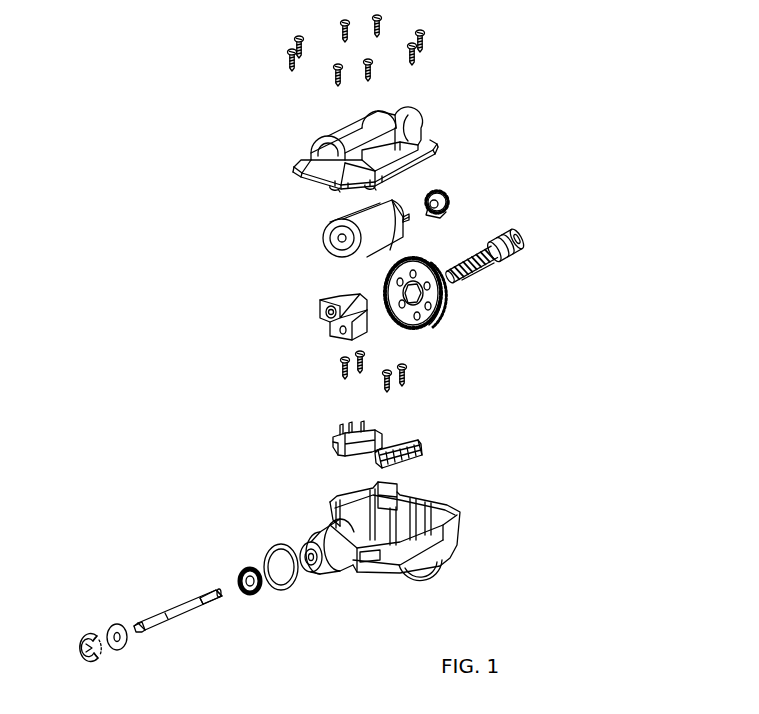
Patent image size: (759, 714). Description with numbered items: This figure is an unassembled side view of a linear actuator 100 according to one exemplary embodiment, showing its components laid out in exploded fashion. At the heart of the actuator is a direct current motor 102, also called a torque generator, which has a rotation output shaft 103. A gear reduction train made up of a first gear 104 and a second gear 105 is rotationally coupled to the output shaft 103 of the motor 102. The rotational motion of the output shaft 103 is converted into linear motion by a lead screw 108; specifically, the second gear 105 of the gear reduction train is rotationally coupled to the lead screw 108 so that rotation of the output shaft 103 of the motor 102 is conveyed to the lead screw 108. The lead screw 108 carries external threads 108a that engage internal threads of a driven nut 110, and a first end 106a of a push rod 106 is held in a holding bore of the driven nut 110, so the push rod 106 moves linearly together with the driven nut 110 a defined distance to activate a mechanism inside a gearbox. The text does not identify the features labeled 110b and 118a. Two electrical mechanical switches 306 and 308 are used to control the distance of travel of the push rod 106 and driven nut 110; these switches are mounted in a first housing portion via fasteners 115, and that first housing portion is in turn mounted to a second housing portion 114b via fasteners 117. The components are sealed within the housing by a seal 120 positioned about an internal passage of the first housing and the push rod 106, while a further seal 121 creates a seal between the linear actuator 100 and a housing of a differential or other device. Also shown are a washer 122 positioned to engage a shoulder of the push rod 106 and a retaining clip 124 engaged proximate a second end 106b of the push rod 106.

The linear actuator 100 is at (662, 147).
The fasteners 117 is at (334, 78).
The second housing portion 114b is at (400, 113).
The direct current motor 102 is at (338, 217).
The rotation output shaft 103 is at (407, 217).
The first gear 104 is at (452, 202).
The second gear 105 is at (428, 317).
The lead screw 108 is at (501, 264).
The external threads 108a is at (483, 281).
The driven nut 110 is at (338, 300).
The bearing bore 110b is at (322, 316).
The fasteners 115 is at (384, 378).
The electrical mechanical switch 306 is at (333, 449).
The electrical mechanical switch 308 is at (423, 449).
The housing base 118a is at (460, 529).
The seal 120 is at (248, 569).
The seal 121 is at (288, 591).
The push rod 106 is at (177, 601).
The first end 106a is at (210, 592).
The second end 106b is at (145, 630).
The washer 122 is at (112, 626).
The retaining clip 124 is at (82, 636).